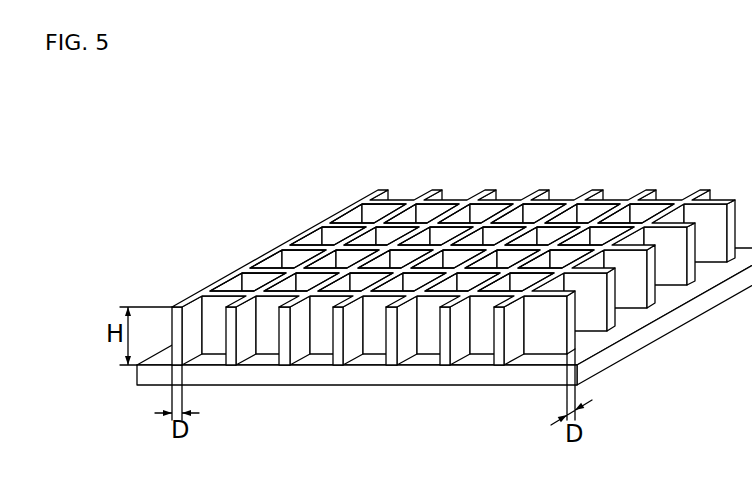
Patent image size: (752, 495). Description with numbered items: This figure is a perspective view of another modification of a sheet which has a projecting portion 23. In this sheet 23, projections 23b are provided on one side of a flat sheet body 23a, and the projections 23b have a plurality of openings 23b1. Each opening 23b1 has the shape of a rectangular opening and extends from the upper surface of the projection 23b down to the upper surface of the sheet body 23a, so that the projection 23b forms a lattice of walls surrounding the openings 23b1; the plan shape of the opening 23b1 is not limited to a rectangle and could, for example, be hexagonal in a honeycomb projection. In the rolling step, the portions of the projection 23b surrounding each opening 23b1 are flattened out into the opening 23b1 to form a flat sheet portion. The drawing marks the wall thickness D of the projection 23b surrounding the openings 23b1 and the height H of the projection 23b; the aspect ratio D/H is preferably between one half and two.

The sheet which has a projecting portion 23 is at (245, 145).
The sheet body 23a is at (360, 385).
The projection 23b is at (238, 290).
The opening 23b1 is at (237, 289).